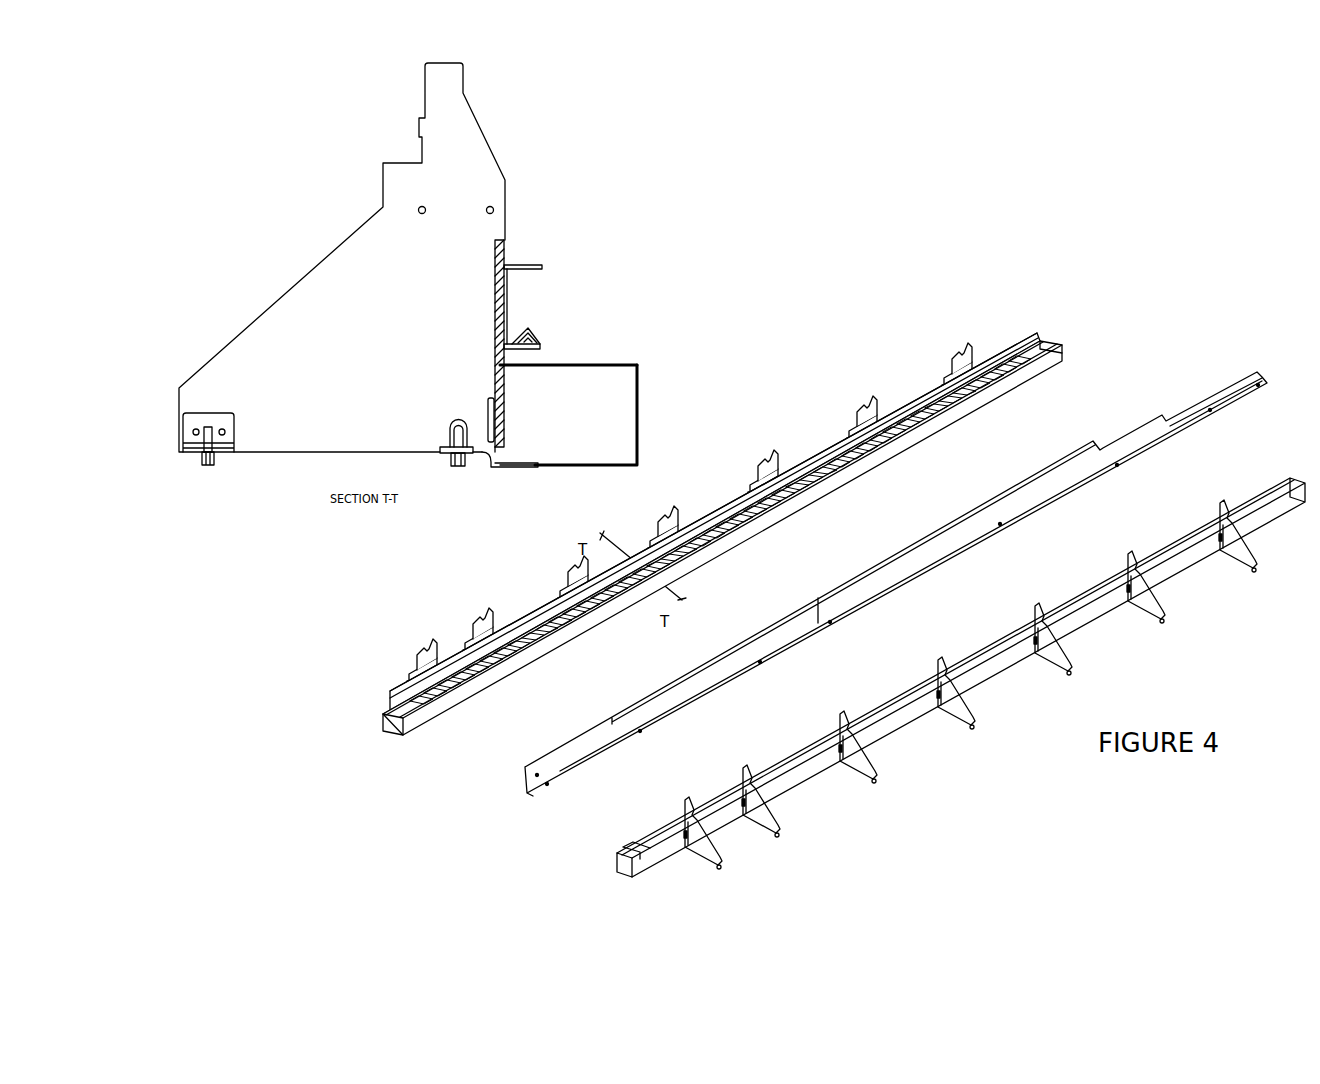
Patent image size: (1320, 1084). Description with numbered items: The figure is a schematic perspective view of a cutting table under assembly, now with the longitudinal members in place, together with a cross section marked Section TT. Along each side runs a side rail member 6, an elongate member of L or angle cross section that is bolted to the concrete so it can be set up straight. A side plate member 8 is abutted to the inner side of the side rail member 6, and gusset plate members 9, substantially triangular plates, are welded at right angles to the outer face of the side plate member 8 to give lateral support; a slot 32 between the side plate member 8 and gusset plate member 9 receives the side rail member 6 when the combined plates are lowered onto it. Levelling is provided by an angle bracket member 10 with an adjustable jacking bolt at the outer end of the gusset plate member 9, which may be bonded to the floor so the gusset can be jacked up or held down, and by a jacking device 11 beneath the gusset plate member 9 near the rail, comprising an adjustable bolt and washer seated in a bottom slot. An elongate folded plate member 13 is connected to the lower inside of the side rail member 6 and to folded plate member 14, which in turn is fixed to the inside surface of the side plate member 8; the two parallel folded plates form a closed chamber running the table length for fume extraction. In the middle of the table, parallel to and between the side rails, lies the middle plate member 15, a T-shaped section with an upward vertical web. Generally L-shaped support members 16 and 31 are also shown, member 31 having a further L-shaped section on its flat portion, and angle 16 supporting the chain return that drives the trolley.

The side rail member 6 is at (510, 468).
The side plate member 8 is at (503, 242).
The gusset plate member 9 is at (343, 303).
The angle bracket member 10 is at (197, 439).
The jacking device 11 is at (445, 450).
The elongate folded plate member 13 is at (637, 430).
The elongate folded plate member 14 is at (582, 365).
The middle plate member 15 is at (523, 787).
The support member (angle) 16 is at (523, 262).
The support member 31 is at (532, 333).
The slot 32 is at (480, 419).